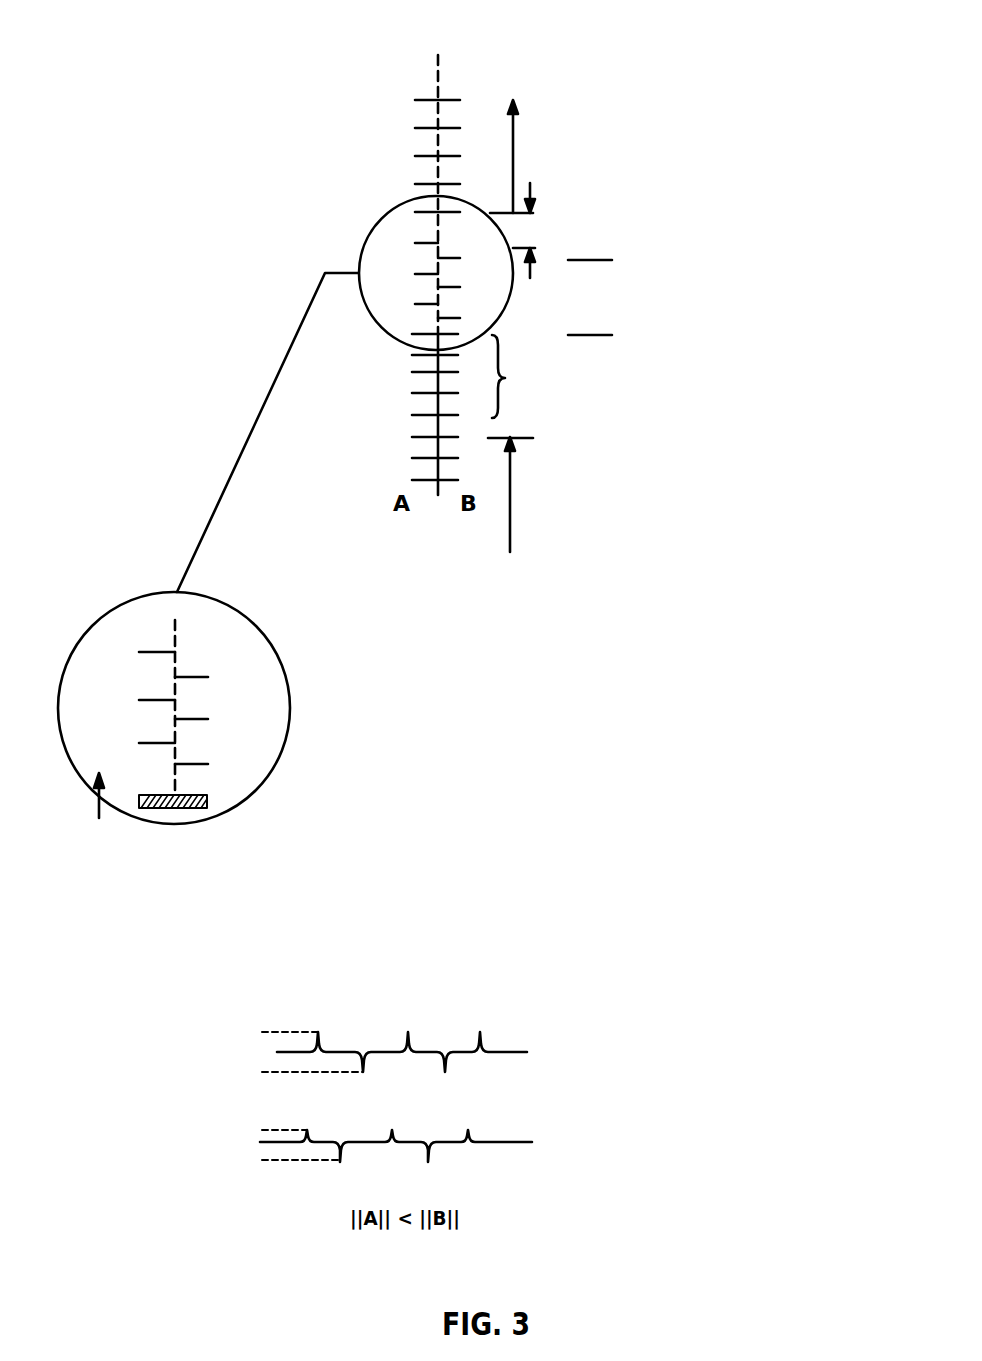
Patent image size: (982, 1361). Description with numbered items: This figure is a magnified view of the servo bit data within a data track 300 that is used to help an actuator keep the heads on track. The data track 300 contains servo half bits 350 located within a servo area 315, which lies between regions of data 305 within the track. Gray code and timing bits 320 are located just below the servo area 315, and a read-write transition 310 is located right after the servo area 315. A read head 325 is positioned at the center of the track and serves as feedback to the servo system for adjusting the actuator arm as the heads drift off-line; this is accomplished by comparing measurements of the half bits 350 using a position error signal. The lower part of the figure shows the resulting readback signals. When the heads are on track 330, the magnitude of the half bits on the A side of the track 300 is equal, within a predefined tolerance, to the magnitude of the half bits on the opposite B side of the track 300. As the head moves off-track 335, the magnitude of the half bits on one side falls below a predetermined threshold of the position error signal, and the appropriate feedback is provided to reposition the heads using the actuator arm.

The data track 300 is at (438, 55).
The data 305 is at (513, 137).
The read-write transition 310 is at (532, 230).
The servo area 315 is at (598, 300).
The gray code and timing bits 320 is at (505, 378).
The read head 325 is at (207, 801).
The on track 330 is at (445, 1042).
The off-track 335 is at (518, 1135).
The servo half bits 350 is at (208, 677).